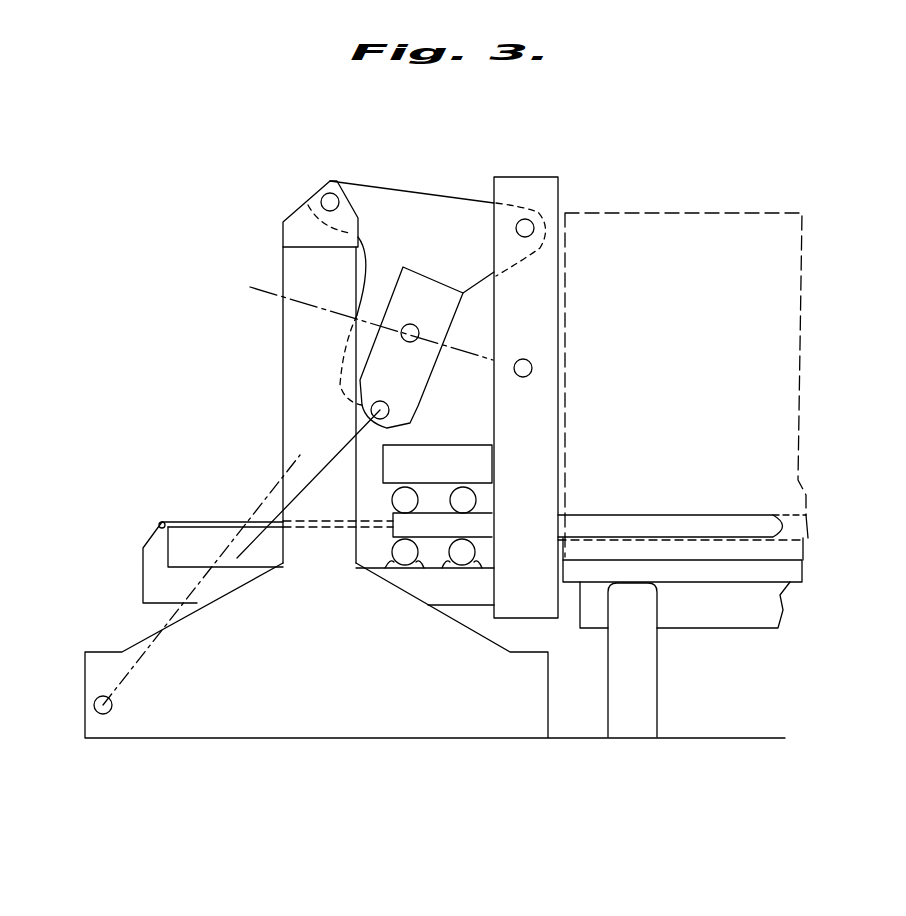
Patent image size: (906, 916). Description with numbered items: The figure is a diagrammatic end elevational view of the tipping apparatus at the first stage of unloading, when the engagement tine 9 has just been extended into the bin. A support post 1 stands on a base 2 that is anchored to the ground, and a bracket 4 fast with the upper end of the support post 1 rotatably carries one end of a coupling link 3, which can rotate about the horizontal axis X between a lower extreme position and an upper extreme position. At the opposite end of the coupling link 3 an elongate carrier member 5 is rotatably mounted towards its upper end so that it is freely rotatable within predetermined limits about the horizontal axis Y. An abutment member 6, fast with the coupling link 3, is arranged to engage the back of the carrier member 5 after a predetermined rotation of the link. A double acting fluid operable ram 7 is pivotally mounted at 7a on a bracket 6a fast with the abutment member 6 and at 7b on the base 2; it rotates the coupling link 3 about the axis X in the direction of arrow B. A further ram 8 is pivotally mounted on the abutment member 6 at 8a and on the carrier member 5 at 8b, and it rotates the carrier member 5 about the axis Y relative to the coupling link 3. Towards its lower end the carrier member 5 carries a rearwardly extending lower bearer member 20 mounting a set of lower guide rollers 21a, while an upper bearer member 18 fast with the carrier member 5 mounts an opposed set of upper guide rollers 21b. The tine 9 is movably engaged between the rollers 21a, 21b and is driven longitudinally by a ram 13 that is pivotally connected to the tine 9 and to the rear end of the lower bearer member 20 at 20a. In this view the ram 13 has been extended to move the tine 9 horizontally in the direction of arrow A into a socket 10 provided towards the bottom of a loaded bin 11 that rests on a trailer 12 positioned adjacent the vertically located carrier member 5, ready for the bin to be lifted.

The support post 1 is at (295, 368).
The base 2 is at (407, 723).
The coupling link 3 is at (433, 212).
The bracket 4 is at (290, 218).
The carrier member 5 is at (545, 468).
The abutment member 6 is at (425, 370).
The bracket 6a is at (410, 428).
The double acting fluid operable ram 7 is at (323, 463).
The pivotal mounting 7a is at (371, 405).
The pivotal mounting 7b is at (112, 706).
The double acting fluid operable ram 8 is at (467, 352).
The pivotal mounting 8a is at (412, 325).
The pivotal mounting 8b is at (523, 368).
The engagement tine 9 is at (737, 523).
The socket 10 is at (807, 488).
The bin 11 is at (780, 425).
The trailer 12 is at (668, 644).
The double acting fluid operable ram 13 is at (193, 520).
The upper bearer member 18 is at (446, 460).
The lower bearer member 20 is at (148, 590).
The pivotal connection 20a is at (158, 524).
The lower guide rollers 21a is at (462, 552).
The upper guide rollers 21b is at (463, 500).
The horizontal axis X- X is at (326, 192).
The horizontal axis Y- Y is at (525, 228).
The arrow A is at (585, 500).
The arrow B is at (397, 222).